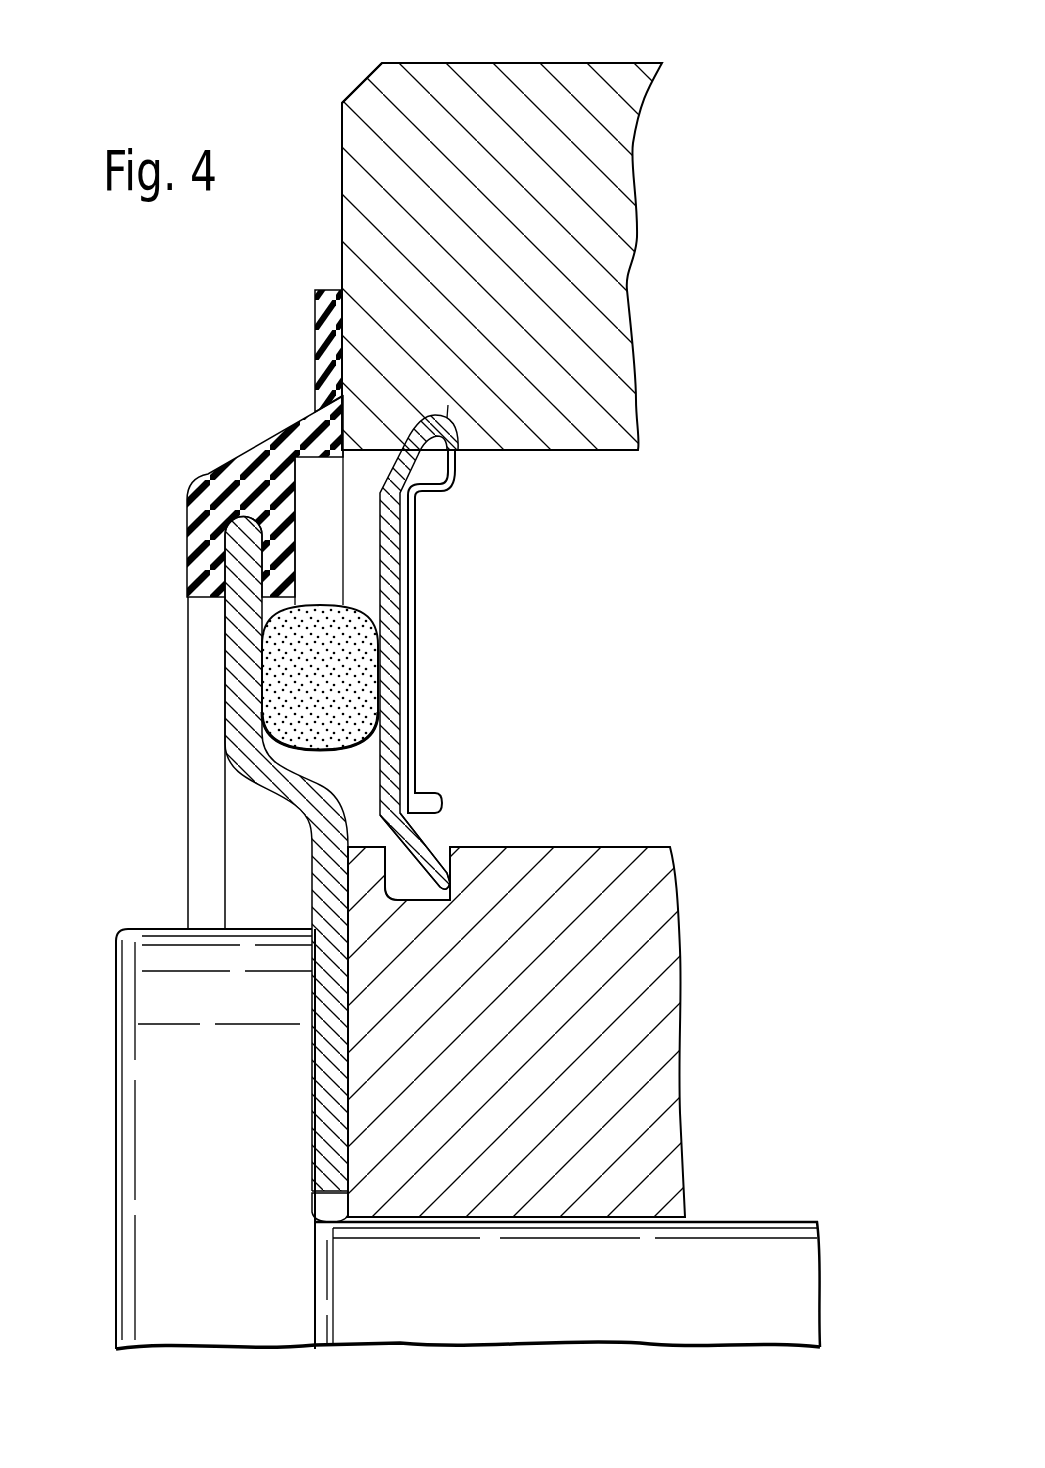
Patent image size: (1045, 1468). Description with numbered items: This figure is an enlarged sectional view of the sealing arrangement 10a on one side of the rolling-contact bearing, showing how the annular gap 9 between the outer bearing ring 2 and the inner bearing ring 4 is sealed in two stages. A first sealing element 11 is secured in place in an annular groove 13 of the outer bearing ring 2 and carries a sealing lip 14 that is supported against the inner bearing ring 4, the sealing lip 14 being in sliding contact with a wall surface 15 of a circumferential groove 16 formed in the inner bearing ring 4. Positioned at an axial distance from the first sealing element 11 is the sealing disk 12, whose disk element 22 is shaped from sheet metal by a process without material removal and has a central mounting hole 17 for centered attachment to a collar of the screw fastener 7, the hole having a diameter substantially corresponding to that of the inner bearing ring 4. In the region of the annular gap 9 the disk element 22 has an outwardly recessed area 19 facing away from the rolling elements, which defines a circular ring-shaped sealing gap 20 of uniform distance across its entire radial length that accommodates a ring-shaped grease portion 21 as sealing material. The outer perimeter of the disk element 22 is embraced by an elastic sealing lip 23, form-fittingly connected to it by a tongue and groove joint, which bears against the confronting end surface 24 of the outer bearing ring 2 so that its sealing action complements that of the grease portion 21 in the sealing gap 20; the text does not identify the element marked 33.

The outer bearing ring 2 is at (603, 192).
The inner bearing ring 4 is at (653, 1145).
The screw fastener 7 is at (752, 1253).
The annular gap 9 is at (570, 642).
The sealing arrangement 10a is at (178, 712).
The first sealing element 11 is at (405, 750).
The sealing disk 12 is at (310, 853).
The annular groove 13 is at (497, 450).
The sealing lip 14 is at (457, 877).
The wall surface 15 is at (440, 858).
The circumferential groove 16 is at (418, 888).
The central mounting hole 17 is at (315, 1209).
The recessed area 19 is at (298, 798).
The sealing gap 20 is at (320, 487).
The grease portion 21 is at (293, 670).
The disk element 22 is at (327, 1082).
The elastic sealing lip 23 is at (317, 320).
The end surface 24 is at (341, 168).
The web 33 is at (247, 530).